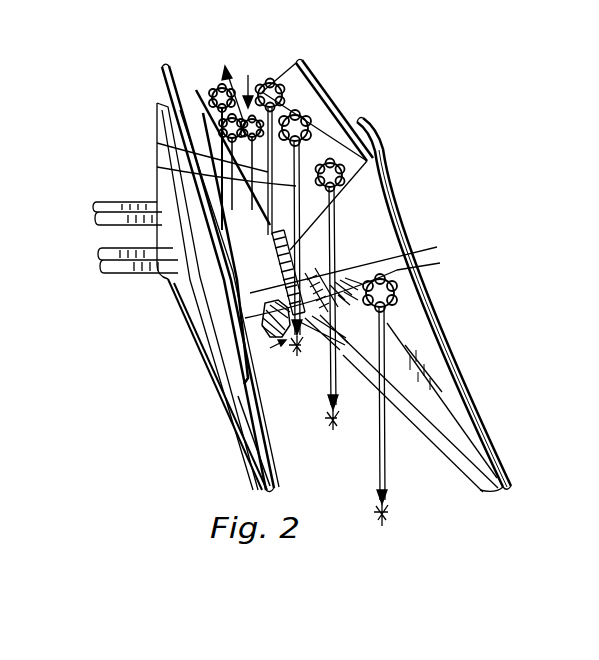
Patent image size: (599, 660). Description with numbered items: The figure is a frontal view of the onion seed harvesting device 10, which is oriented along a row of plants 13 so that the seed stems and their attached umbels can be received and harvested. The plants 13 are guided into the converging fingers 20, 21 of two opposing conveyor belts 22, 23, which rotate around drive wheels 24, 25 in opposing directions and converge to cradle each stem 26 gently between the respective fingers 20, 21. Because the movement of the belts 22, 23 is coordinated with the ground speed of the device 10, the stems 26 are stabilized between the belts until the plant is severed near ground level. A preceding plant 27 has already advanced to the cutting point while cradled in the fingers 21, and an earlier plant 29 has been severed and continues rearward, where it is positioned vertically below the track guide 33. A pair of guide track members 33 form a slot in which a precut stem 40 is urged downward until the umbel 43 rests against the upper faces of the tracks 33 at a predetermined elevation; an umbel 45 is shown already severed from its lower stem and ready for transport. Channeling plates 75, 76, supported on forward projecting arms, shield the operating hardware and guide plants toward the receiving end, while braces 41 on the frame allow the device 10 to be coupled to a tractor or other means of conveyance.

The device 10 is at (389, 152).
The plants 13 is at (300, 365).
The fingers 20 is at (396, 256).
The fingers 21 is at (267, 273).
The conveyor belt 22 is at (300, 290).
The conveyor belt 23 is at (262, 288).
The drive wheel 24 is at (385, 306).
The drive wheel 25 is at (263, 313).
The stem 26 is at (394, 206).
The preceding plant 27 is at (355, 122).
The preceding plant 29 is at (304, 65).
The track guide 33 is at (158, 144).
The stem 40 is at (162, 72).
The braces 41 is at (108, 206).
The umbel 43 is at (232, 112).
The umbel 45 is at (222, 90).
The channeling plate 75 is at (436, 392).
The channeling plate 76 is at (440, 357).